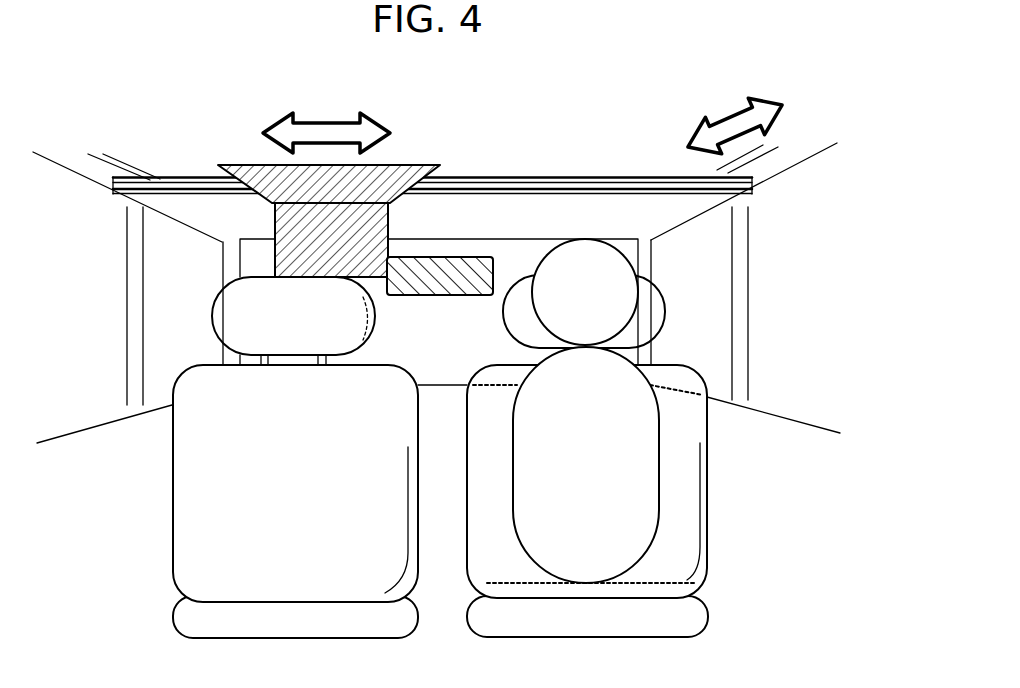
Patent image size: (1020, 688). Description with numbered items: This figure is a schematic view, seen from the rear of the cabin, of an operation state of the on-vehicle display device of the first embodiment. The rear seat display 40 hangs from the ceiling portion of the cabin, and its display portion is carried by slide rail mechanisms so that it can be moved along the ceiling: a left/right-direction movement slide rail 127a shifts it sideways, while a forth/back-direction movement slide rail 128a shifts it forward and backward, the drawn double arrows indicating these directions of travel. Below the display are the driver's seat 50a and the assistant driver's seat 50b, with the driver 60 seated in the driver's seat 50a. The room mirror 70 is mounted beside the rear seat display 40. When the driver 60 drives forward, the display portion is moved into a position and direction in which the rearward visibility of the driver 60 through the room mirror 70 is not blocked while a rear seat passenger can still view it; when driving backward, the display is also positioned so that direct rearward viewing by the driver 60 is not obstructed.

The rear seat display 40 is at (205, 234).
The driver's seat 50a is at (708, 480).
The assistant driver's seat 50b is at (173, 487).
The driver 60 is at (640, 250).
The room mirror 70 is at (458, 257).
The left/right-direction movement slide rail 127a is at (175, 178).
The forth/back-direction movement slide rail 128a is at (712, 176).